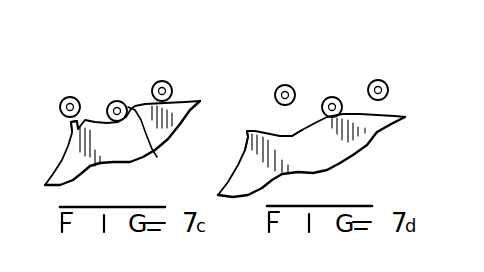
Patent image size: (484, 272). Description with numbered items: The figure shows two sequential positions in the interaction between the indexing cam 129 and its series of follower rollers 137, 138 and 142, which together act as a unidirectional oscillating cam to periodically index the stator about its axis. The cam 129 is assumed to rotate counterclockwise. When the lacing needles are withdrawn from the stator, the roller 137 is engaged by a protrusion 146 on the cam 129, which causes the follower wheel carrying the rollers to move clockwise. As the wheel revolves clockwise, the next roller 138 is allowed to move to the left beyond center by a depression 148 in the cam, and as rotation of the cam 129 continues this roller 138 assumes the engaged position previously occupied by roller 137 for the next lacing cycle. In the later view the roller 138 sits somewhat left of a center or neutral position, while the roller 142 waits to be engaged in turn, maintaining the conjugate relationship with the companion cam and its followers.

In FIG. 7c, the indexing cam 129 is at (112, 148).
In FIG. 7d, the indexing cam 129 is at (317, 148).
In FIG. 7c, the follower roller 137 is at (70, 97).
In FIG. 7d, the follower roller 137 is at (287, 84).
In FIG. 7c, the follower roller 138 is at (115, 101).
In FIG. 7d, the follower roller 138 is at (330, 96).
In FIG. 7c, the follower roller 142 is at (167, 81).
In FIG. 7d, the follower roller 142 is at (378, 80).
In FIG. 7c, the protrusion 146 is at (72, 133).
In FIG. 7d, the protrusion 146 is at (248, 138).
In FIG. 7c, the depression 148 is at (159, 138).
In FIG. 7d, the depression 148 is at (292, 133).